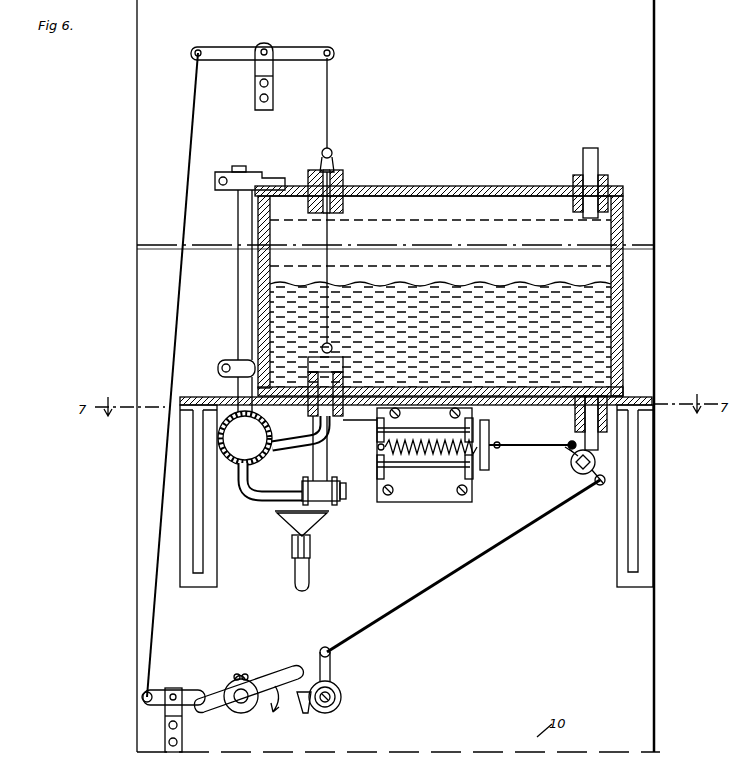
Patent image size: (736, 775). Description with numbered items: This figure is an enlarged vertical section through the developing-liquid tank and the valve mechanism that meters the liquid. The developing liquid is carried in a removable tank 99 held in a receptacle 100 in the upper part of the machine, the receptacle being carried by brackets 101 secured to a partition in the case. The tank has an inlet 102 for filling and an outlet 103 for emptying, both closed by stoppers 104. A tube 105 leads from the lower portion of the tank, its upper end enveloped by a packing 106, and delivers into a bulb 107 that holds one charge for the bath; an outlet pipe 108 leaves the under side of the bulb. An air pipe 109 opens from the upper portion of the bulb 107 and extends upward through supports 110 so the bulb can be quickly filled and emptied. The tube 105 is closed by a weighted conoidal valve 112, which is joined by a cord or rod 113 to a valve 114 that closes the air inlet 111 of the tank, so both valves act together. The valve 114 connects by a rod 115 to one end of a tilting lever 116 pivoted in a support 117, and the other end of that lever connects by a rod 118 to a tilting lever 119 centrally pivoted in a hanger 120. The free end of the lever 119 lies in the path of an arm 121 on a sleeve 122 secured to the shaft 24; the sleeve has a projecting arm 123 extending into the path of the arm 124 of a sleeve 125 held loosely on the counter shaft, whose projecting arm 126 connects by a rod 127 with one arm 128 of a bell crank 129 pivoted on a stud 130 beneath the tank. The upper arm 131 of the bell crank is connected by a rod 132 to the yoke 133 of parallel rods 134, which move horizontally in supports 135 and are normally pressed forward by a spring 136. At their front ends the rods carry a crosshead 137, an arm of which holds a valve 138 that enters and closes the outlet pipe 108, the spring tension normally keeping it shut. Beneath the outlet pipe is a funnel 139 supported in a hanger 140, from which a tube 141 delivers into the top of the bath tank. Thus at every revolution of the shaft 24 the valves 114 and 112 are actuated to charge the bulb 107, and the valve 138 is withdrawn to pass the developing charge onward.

The removable tank 99 is at (470, 206).
The receptacle 100 is at (624, 384).
The brackets 101 is at (640, 466).
The inlet 102 is at (597, 170).
The outlet 103 is at (578, 418).
The stoppers 104 is at (588, 150).
The tube 105 is at (318, 430).
The packing 106 is at (380, 406).
The bulb 107 is at (257, 456).
The outlet pipe 108 is at (258, 500).
The air pipe 109 is at (242, 312).
The supports 110 is at (246, 178).
The air inlet 111 is at (334, 182).
The weighted conoidal valve 112 is at (325, 379).
The cord or rod 113 is at (328, 262).
The valve 114 is at (330, 152).
The rod 115 is at (328, 112).
The tilting lever 116 is at (302, 56).
The support 117 is at (255, 108).
The rod 118 is at (182, 375).
The tilting lever 119 is at (157, 690).
The hanger 120 is at (185, 690).
The arm 121 is at (217, 708).
The sleeve 122 is at (240, 712).
The projecting arm 123 is at (268, 683).
The shaft 24 is at (243, 700).
The arm 124 is at (304, 708).
The sleeve 125 is at (335, 706).
The projecting arm 126 is at (329, 660).
The rod 127 is at (395, 617).
The arm 128 is at (590, 484).
The bell crank 129 is at (563, 460).
The stud 130 is at (574, 470).
The upper arm 131 is at (568, 449).
The rod 132 is at (522, 444).
The yoke 133 is at (485, 460).
The parallel rods 134 is at (426, 480).
The supports 135 is at (494, 492).
The spring 136 is at (427, 466).
The crosshead 137 is at (327, 452).
The valve 138 is at (318, 500).
The funnel 139 is at (312, 533).
The hanger 140 is at (310, 552).
The tube 141 is at (310, 584).